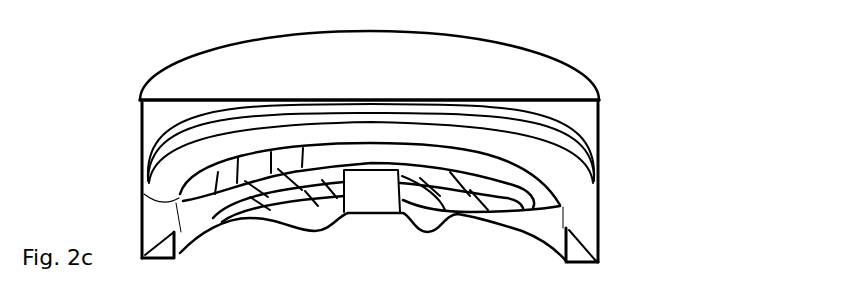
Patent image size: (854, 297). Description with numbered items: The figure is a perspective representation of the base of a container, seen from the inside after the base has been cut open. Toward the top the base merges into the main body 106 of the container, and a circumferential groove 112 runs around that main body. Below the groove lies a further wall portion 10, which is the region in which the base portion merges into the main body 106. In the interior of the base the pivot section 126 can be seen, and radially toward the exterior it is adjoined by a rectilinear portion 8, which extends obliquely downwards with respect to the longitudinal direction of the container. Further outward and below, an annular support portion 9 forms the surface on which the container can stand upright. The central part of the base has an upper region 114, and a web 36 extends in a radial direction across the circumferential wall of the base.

The rectilinear portion 8 is at (183, 216).
The annular support portion 9 is at (583, 266).
The further wall portion 10 is at (143, 228).
The web 36 is at (452, 160).
The main body 106 is at (124, 100).
The circumferential groove 112 is at (600, 172).
The upper region of the central region 114 is at (350, 160).
The pivot section 126 is at (139, 196).